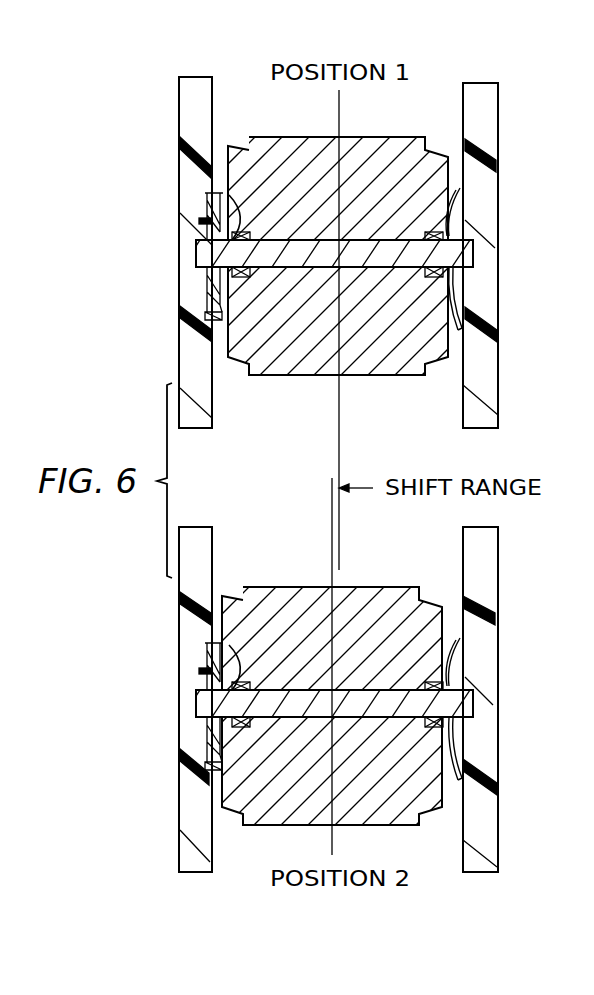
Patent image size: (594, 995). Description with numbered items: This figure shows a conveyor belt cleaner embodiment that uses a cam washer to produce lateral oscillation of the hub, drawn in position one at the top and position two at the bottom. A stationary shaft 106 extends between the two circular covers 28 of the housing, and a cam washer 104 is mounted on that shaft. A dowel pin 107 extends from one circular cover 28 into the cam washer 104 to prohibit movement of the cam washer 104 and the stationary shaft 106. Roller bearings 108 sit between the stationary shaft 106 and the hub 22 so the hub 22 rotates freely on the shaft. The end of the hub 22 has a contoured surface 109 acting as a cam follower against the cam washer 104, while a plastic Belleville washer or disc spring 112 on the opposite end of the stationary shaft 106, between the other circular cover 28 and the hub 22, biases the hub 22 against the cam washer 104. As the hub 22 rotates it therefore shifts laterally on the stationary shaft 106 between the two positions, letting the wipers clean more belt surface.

The hub 22 is at (360, 137).
The circular covers 28 is at (482, 143).
The cam washer 104 is at (218, 316).
The stationary shaft 106 is at (196, 250).
The dowel pin 107 is at (203, 220).
The roller bearings 108 is at (222, 190).
The contoured surface 109 is at (212, 322).
The Belleville washer or disc spring 112 is at (452, 297).